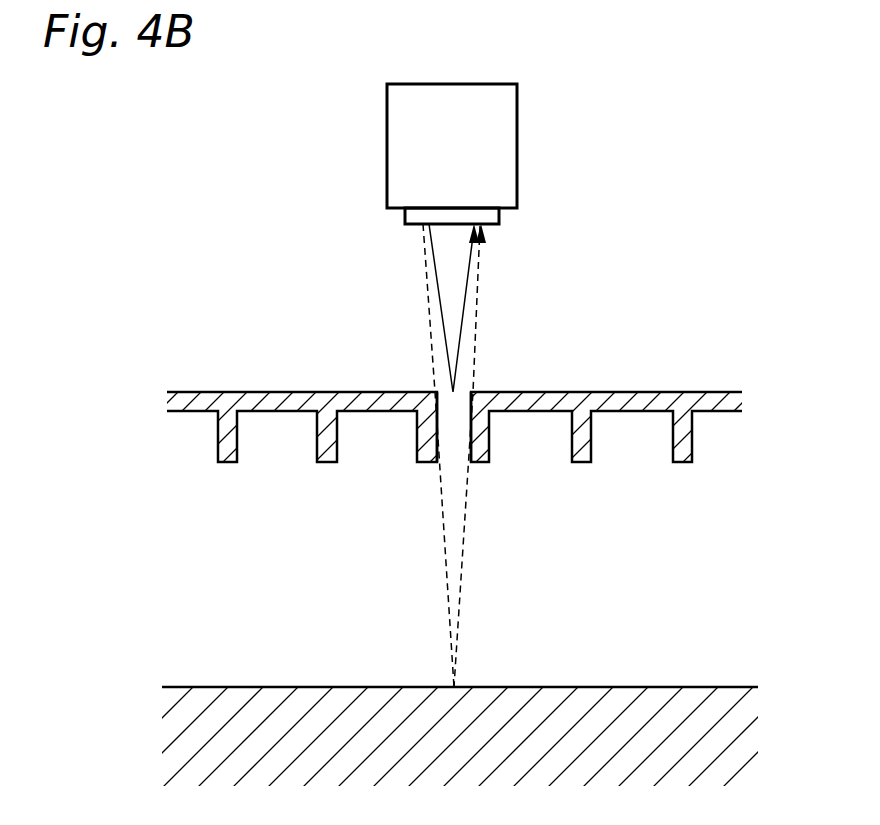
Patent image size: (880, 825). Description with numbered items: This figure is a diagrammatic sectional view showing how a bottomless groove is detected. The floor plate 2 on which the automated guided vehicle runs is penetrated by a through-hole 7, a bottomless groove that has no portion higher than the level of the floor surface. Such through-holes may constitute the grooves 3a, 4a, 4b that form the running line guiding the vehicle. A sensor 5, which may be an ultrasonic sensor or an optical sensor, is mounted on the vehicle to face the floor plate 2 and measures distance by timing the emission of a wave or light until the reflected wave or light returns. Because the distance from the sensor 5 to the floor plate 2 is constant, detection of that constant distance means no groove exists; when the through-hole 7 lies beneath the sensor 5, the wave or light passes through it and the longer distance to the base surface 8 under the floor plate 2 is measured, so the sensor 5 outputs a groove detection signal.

The sensor 5 is at (517, 140).
The floor plate 2 is at (622, 392).
The through-hole 7 is at (453, 408).
The groove 3a is at (432, 392).
The groove 4a is at (375, 455).
The groove 4b is at (406, 455).
The base surface 8 is at (635, 687).